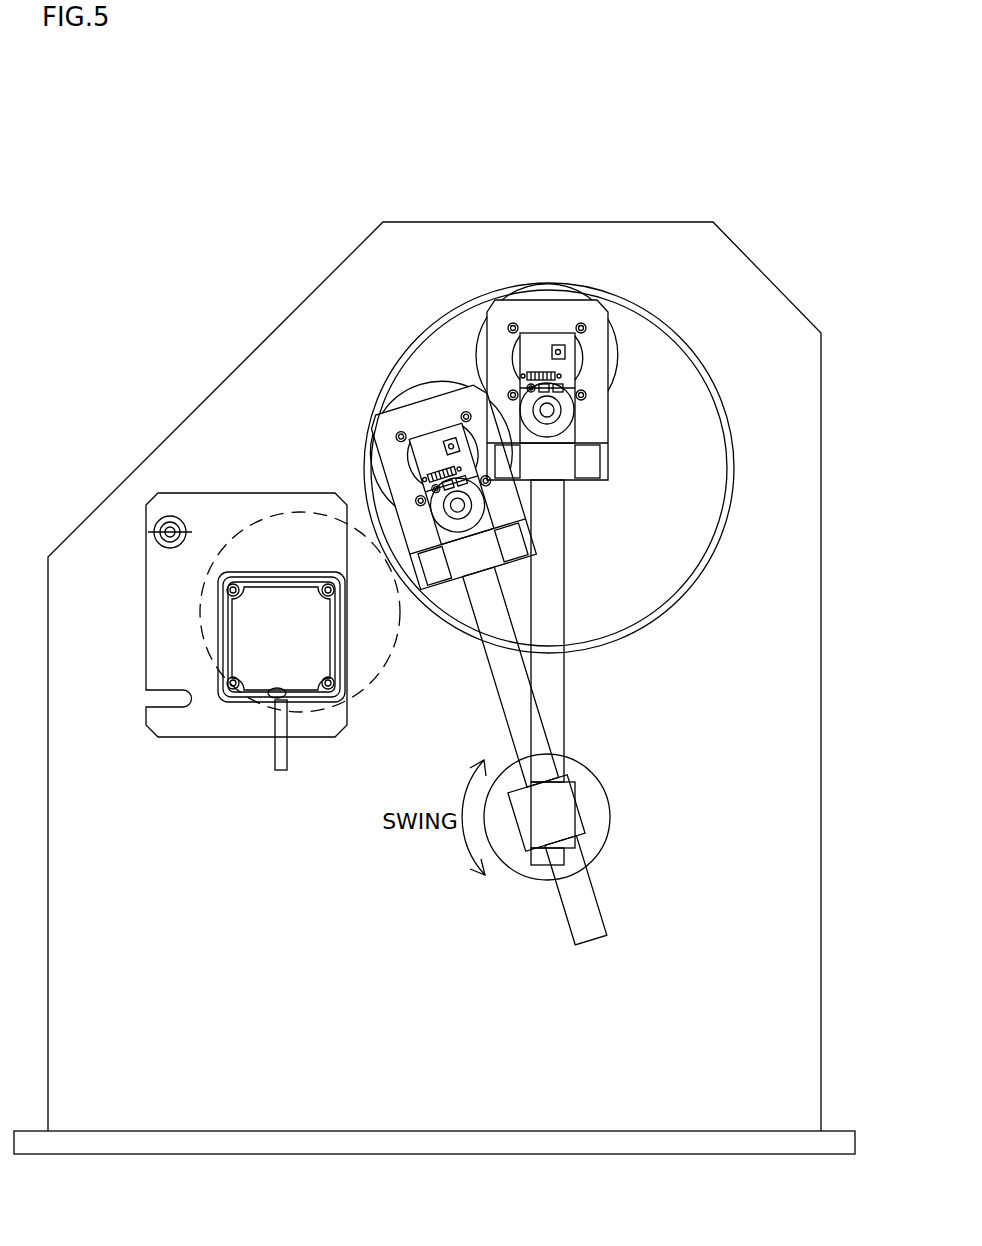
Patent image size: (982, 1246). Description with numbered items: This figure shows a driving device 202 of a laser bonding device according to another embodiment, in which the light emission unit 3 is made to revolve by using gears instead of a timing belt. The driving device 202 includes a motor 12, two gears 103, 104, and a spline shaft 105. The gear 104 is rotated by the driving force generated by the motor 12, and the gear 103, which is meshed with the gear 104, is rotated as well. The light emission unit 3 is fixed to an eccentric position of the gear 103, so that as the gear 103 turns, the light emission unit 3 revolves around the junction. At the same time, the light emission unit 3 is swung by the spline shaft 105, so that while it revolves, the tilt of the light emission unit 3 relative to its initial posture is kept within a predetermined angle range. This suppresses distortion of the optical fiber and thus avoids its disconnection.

The light emission unit 3 is at (541, 342).
The motor 12 is at (298, 667).
The gear 103 is at (632, 547).
The gear 104 is at (373, 668).
The spline shaft 105 is at (555, 693).
The driving device 202 is at (686, 295).